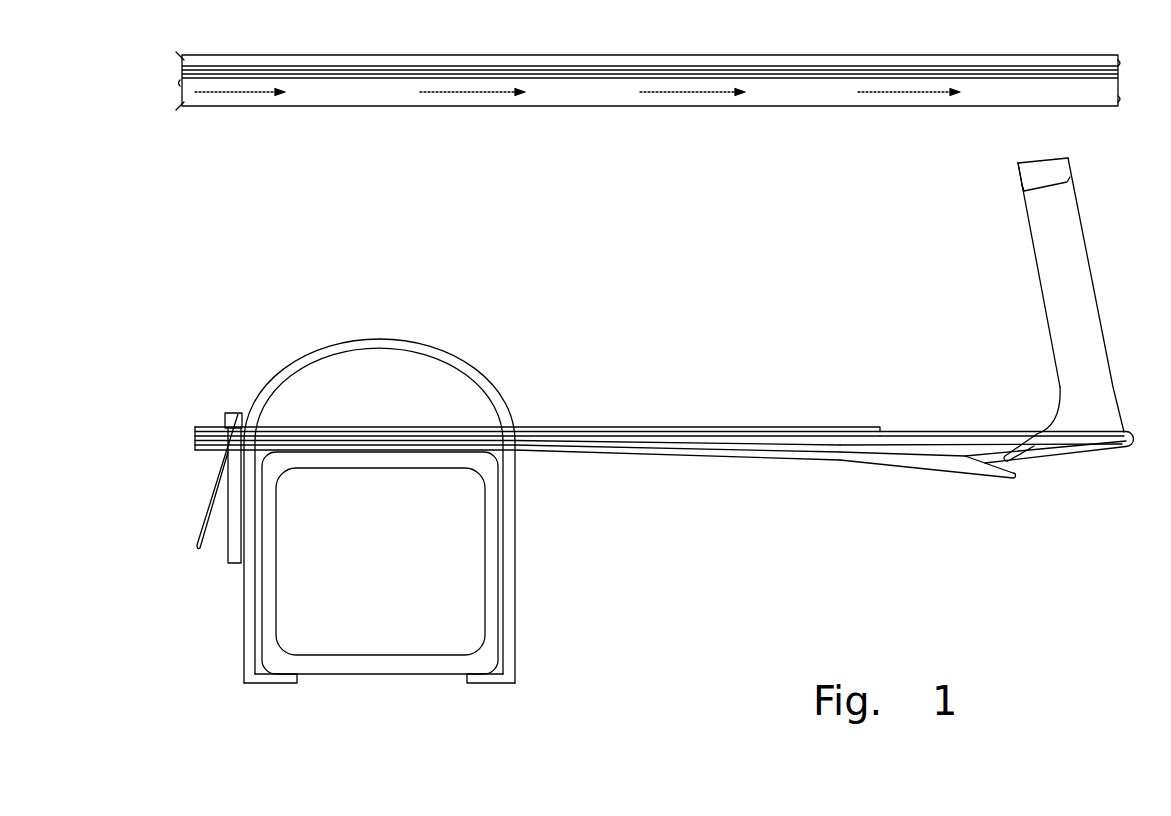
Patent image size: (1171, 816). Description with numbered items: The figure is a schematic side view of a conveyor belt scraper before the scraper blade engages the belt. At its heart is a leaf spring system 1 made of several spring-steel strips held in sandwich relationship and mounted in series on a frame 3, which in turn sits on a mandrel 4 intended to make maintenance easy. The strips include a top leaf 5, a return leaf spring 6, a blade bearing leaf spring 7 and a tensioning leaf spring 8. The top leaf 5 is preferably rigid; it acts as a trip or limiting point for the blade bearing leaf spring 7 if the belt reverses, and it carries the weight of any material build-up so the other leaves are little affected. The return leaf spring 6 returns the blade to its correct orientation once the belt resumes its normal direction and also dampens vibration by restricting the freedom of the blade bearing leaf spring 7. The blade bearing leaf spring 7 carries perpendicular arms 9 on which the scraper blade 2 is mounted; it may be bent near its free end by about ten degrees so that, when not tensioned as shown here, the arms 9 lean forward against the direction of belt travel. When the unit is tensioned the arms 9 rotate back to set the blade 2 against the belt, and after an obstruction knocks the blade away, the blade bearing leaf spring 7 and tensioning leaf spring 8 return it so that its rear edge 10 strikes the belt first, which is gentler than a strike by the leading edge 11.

The leaf spring system 1 is at (590, 578).
The scraper blade 2 is at (1068, 175).
The frame 3 is at (527, 643).
The mandrel 4 is at (280, 730).
The top leaf 5 is at (843, 420).
The return leaf spring 6 is at (1020, 425).
The blade bearing leaf spring 7 is at (1128, 532).
The tensioning leaf spring 8 is at (990, 487).
The arms 9 is at (1050, 265).
The rear edge 10 is at (1032, 139).
The leading edge 11 is at (1012, 159).